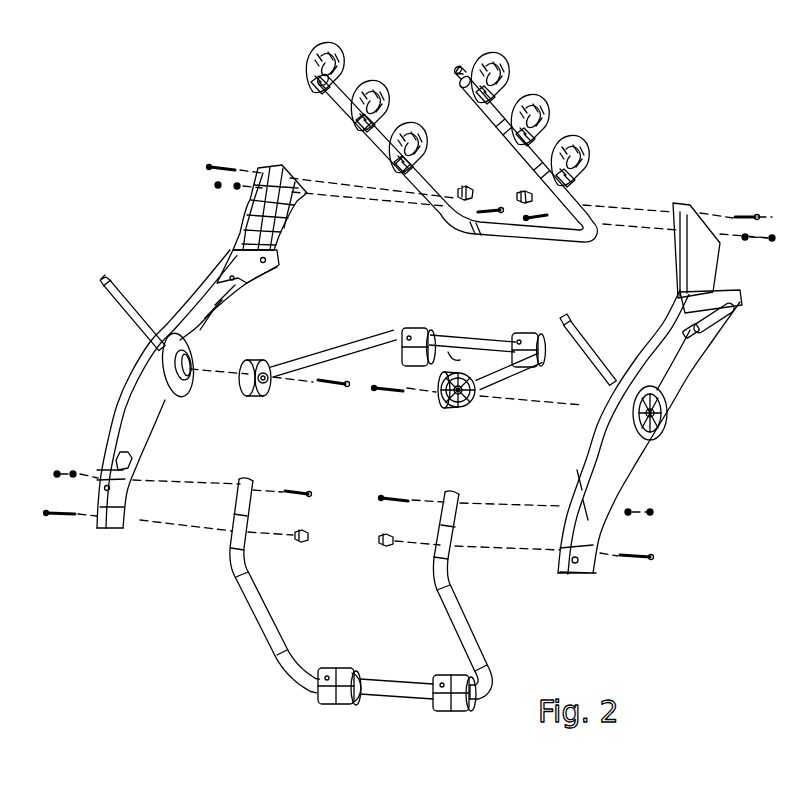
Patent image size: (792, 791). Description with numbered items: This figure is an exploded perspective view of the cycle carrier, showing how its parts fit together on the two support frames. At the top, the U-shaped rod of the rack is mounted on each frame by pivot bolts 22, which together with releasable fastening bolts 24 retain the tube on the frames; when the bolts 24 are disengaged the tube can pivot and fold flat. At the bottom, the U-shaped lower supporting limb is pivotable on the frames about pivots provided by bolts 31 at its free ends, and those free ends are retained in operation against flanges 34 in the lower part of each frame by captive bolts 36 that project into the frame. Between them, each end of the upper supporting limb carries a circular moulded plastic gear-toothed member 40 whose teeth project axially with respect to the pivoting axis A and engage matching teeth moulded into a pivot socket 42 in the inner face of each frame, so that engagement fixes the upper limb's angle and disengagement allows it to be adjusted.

The bolts 22 is at (470, 224).
The releasable fastening bolts 24 is at (516, 196).
The bolts 31 is at (295, 487).
The flanges 34 is at (124, 457).
The bolts 36 is at (299, 543).
The gear-toothed member 40 is at (243, 362).
The pivot socket 42 is at (182, 368).
The pivoting axis A is at (213, 369).